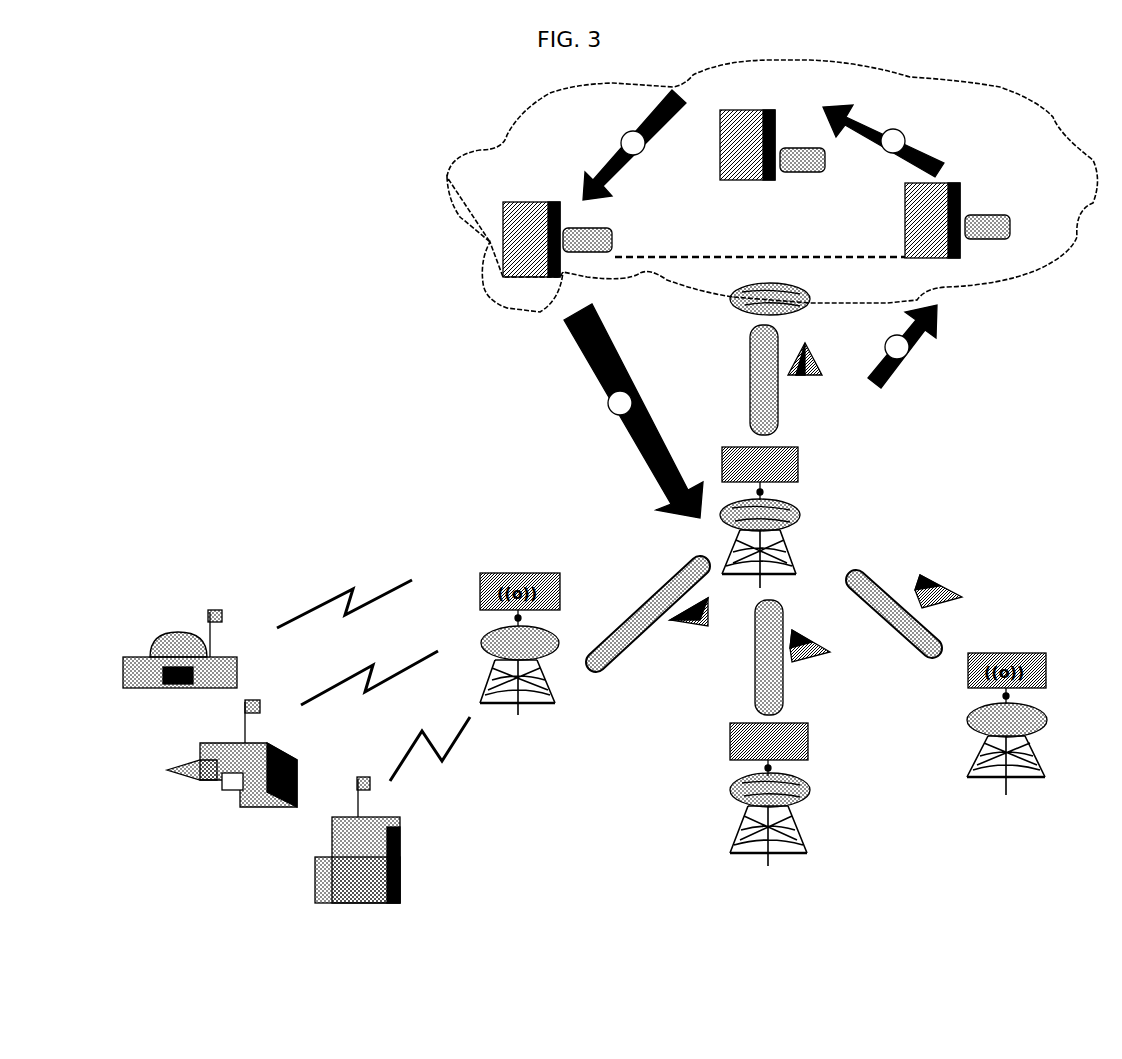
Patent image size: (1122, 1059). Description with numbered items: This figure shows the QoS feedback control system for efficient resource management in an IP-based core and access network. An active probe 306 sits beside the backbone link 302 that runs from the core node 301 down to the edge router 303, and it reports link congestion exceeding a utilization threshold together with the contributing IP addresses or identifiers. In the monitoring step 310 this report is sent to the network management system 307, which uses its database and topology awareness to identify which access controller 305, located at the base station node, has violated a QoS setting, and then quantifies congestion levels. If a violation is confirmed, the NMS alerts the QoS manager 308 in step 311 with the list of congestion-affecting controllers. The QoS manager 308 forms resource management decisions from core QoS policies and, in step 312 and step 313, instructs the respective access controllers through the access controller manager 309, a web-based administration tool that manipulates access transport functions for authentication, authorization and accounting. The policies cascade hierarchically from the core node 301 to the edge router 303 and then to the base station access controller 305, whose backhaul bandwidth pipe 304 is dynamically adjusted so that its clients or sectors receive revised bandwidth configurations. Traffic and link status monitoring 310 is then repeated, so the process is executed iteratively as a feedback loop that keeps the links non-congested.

The core node 301 is at (745, 302).
The backbone link 302 is at (750, 395).
The edge router 303 is at (830, 540).
The backhaul bandwidth pipe 304 is at (750, 660).
The access controller 305 is at (838, 818).
The active probe 306 is at (848, 425).
The network management system 307 is at (905, 230).
The QoS manager 308 is at (722, 178).
The access controller manager 309 is at (557, 263).
The monitoring of traffic and link status 310 is at (900, 380).
The NMS alert to QoS manager 311 is at (927, 123).
The step 3 QoS manager to ACM path 312 is at (620, 150).
The commands to access controllers 313 is at (618, 444).